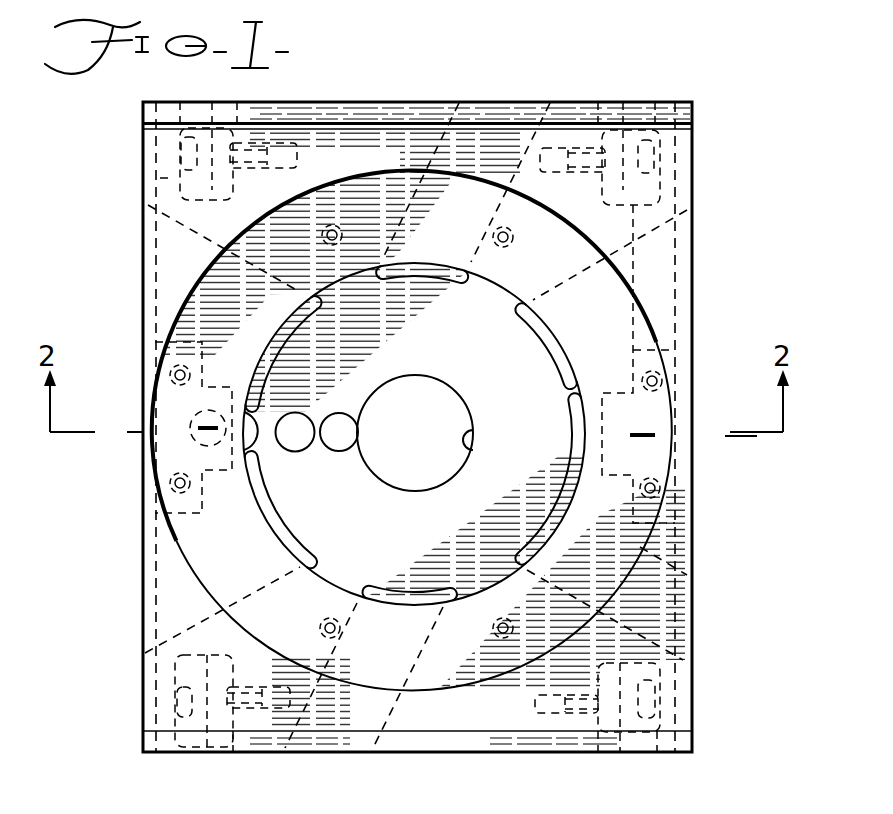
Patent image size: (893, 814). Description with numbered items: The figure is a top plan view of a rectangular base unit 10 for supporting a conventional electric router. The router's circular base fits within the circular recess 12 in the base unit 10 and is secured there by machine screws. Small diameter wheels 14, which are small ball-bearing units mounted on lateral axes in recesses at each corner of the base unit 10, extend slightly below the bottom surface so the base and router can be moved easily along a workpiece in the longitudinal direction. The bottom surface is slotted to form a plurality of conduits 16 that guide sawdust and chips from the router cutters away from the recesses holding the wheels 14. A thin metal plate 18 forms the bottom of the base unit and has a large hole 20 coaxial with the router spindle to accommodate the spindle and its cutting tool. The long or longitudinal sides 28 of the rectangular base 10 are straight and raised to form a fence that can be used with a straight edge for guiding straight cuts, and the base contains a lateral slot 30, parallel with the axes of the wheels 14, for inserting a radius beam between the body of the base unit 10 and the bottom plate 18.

The rectangular base unit 10 is at (724, 161).
The circular recess 12 is at (630, 291).
The small diameter wheels 14 is at (634, 102).
The conduits 16 is at (548, 101).
The thin metal plate 18 is at (510, 369).
The large hole 20 is at (474, 450).
The longitudinal sides 28 is at (148, 622).
The lateral slot 30 is at (652, 352).